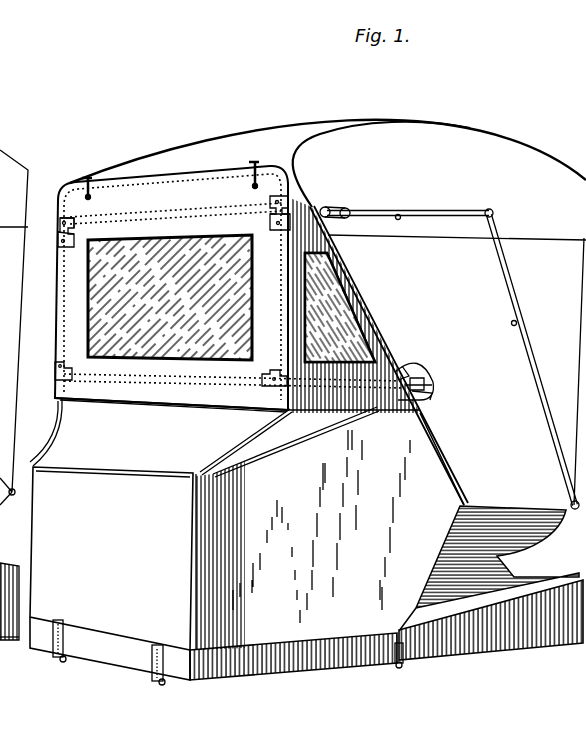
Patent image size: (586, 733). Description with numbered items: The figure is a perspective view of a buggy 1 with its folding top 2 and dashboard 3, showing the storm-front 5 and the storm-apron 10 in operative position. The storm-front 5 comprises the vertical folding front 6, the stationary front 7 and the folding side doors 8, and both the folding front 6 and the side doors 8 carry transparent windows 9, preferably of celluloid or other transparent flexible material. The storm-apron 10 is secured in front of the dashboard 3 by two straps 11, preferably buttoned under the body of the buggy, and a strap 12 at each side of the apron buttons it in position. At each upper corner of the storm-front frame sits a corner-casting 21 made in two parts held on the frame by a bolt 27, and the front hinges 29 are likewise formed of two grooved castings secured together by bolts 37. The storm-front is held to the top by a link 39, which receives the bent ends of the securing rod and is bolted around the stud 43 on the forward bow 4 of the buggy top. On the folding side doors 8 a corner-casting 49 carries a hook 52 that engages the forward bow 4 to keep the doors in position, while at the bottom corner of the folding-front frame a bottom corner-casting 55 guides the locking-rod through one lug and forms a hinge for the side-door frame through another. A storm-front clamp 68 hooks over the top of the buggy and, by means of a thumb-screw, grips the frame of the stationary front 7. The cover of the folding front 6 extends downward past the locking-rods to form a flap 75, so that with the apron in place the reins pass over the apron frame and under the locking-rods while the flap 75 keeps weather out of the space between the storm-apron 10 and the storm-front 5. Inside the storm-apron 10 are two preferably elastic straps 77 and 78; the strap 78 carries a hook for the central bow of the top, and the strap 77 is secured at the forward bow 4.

The buggy 1 is at (328, 137).
The folding top 2 is at (420, 138).
The dashboard 3 is at (110, 657).
The forward bow 4 is at (397, 370).
The storm-front 5 is at (58, 347).
The vertical folding front 6 is at (80, 320).
The stationary front 7 is at (164, 197).
The folding side doors 8 is at (360, 321).
The transparent windows 9 is at (110, 293).
The storm-apron 10 is at (60, 416).
The straps 11 is at (152, 647).
The strap 12 is at (400, 667).
The corner-casting 21 is at (77, 233).
The bolt 27 is at (59, 237).
The front hinges 29 is at (62, 214).
The bolts 37 is at (70, 222).
The link 39 is at (333, 207).
The stud 43 is at (347, 209).
The corner-casting for the folding side doors 49 is at (398, 392).
The hook 52 is at (420, 377).
The bottom corner-casting 55 is at (62, 381).
The storm-front clamp 68 is at (89, 180).
The flap 75 is at (185, 404).
The strap 77 is at (410, 376).
The strap 78 is at (430, 395).